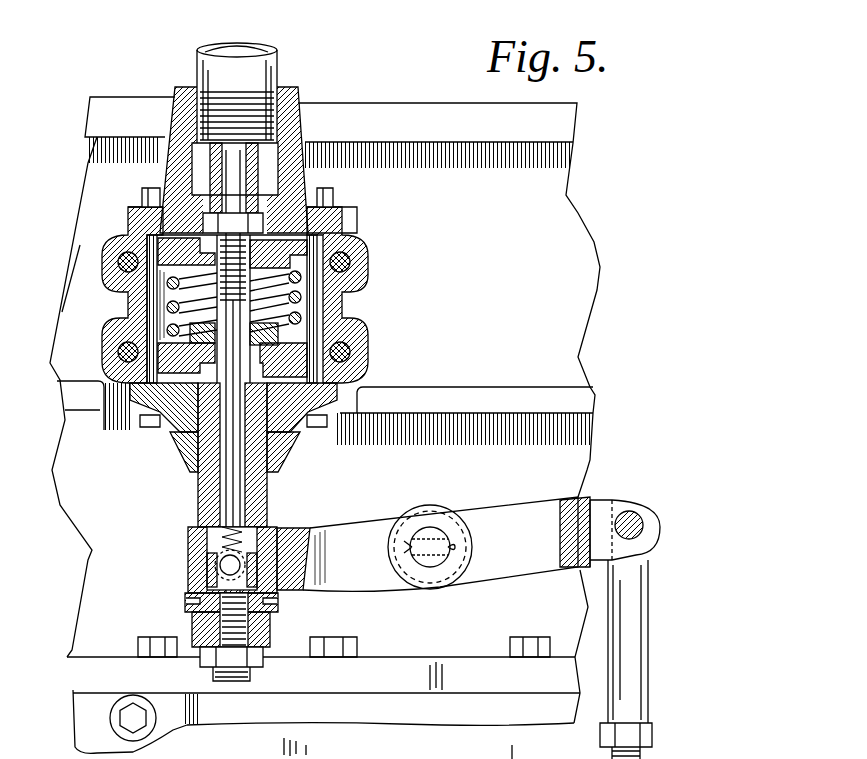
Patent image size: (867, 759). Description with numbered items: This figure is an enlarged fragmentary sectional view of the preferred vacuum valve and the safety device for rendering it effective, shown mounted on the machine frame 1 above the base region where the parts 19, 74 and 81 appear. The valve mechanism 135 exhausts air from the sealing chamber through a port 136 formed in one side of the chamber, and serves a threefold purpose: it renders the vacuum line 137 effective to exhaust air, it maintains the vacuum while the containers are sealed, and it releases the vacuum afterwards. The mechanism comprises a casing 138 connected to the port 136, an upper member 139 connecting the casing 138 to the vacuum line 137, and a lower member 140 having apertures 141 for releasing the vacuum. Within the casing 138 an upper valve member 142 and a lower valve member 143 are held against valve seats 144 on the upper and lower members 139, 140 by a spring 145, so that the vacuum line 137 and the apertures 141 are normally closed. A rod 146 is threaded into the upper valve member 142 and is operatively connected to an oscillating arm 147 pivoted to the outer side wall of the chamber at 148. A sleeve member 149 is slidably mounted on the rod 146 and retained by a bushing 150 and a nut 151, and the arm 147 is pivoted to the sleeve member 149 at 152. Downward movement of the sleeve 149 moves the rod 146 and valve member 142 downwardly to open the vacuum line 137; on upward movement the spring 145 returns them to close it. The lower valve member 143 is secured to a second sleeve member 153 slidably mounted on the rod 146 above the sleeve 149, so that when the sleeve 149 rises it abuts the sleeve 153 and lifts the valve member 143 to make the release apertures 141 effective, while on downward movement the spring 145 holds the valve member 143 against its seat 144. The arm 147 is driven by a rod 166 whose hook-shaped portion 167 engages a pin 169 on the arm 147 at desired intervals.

The frame 1 is at (97, 630).
The shaft 19 is at (520, 758).
The bracket 74 is at (487, 677).
The pin 81 is at (277, 745).
The valve mechanism 135 is at (125, 215).
The port 136 is at (343, 303).
The vacuum line 137 is at (273, 57).
The casing 138 is at (362, 267).
The upper member 139 is at (287, 127).
The lower member 140 is at (277, 467).
The apertures 141 is at (172, 418).
The upper valve member 142 is at (340, 215).
The lower valve member 143 is at (155, 353).
The valve seats 144 is at (153, 185).
The spring 145 is at (330, 313).
The rod 146 is at (207, 517).
The oscillating arm 147 is at (537, 563).
The pivot 148 is at (433, 528).
The sleeve member 149 is at (218, 562).
The bushing 150 is at (263, 632).
The nut 151 is at (262, 660).
The pivot 152 is at (183, 592).
The sleeve member 153 is at (235, 483).
The rod 166 is at (640, 650).
The hook-shaped portion 167 is at (650, 530).
The pin 169 is at (632, 517).